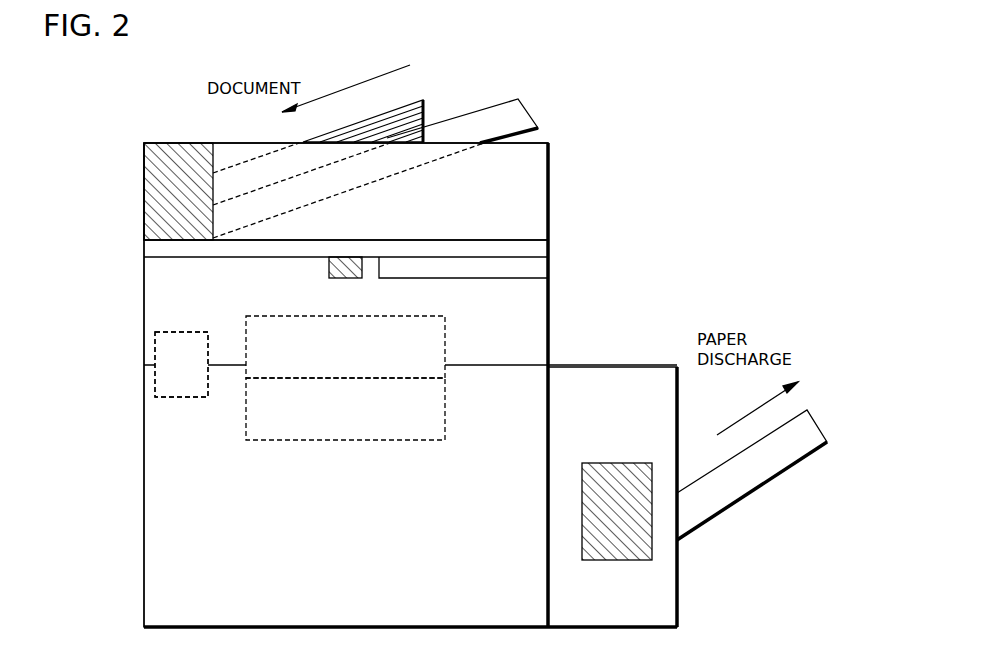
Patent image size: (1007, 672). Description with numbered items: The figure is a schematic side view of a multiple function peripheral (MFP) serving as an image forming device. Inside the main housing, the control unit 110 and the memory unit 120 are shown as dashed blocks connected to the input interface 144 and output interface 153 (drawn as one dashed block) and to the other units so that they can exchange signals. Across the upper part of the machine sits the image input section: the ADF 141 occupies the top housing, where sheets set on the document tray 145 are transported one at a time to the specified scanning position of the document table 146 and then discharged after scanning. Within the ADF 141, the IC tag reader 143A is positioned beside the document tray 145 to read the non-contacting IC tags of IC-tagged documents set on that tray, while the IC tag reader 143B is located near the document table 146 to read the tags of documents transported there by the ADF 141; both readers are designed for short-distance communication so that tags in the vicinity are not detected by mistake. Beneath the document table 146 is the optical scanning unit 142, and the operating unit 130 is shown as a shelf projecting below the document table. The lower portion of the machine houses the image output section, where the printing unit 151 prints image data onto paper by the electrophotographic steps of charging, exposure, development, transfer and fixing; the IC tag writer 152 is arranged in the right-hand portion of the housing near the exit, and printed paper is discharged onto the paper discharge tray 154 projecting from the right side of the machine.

The control unit 110 is at (445, 337).
The memory unit 120 is at (445, 425).
The operating unit 130 is at (548, 276).
The ADF 141 is at (548, 186).
The optical scanning unit 142 is at (548, 340).
The IC tag reader 143A is at (143, 163).
The IC tag reader 143B is at (345, 258).
The input interface 144 is at (173, 397).
The document tray 145 is at (530, 107).
The document table 146 is at (548, 247).
The printing unit 151 is at (142, 500).
The IC tag writer 152 is at (652, 556).
The output interface 153 is at (181, 364).
The paper discharge tray 154 is at (730, 512).